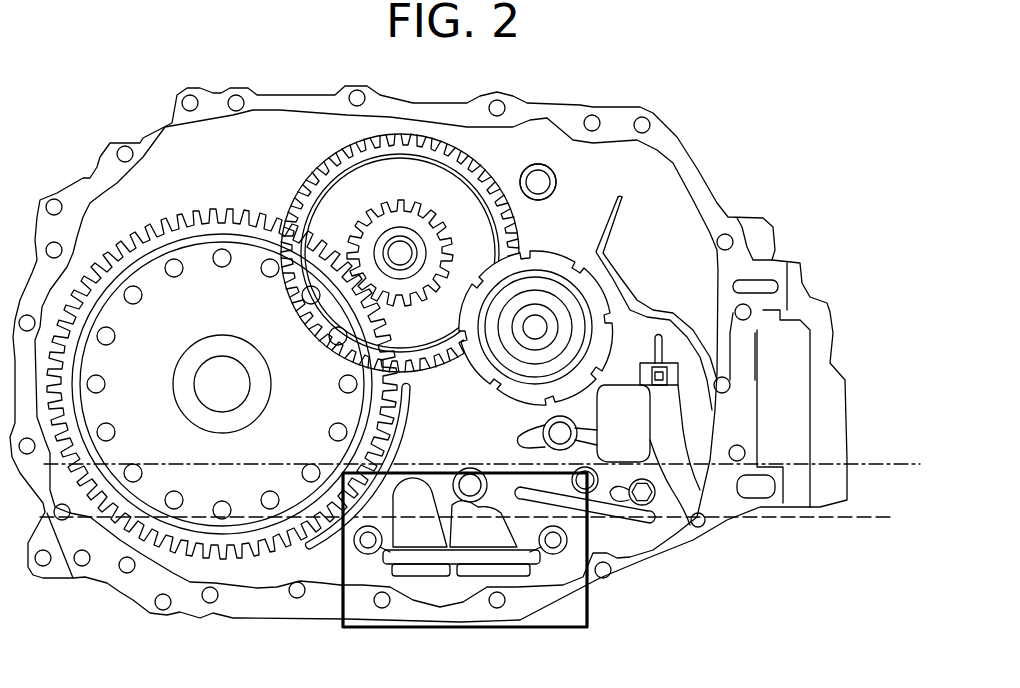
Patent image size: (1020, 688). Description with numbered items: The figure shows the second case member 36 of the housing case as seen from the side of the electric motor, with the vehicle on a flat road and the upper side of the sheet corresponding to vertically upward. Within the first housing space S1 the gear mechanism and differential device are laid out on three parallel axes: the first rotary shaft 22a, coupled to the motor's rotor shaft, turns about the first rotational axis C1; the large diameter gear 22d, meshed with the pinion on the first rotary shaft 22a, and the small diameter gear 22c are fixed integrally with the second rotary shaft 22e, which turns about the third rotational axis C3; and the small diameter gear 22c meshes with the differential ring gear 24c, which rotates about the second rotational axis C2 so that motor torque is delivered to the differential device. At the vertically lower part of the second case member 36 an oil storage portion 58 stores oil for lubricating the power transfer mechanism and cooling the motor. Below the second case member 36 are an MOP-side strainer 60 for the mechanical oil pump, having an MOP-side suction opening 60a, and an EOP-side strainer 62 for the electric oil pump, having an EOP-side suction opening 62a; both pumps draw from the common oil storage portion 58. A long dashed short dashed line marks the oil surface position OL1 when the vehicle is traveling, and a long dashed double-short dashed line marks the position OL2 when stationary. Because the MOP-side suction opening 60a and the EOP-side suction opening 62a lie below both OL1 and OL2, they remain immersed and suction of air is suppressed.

The second case member 36 is at (165, 132).
The large diameter gear 22d is at (325, 157).
The third rotational axis C3 is at (400, 253).
The first rotary shaft 22a is at (535, 295).
The first housing space S1 is at (574, 168).
The first rotational axis C1 is at (535, 327).
The small diameter gear 22c is at (377, 227).
The second rotary shaft 22e is at (430, 240).
The MOP-side strainer 60 is at (431, 484).
The EOP-side strainer 62 is at (502, 492).
The position of the oil surface when the vehicle is stationary OL2 is at (868, 465).
The position of the oil surface when the vehicle is traveling OL1 is at (855, 520).
The second rotational axis C2 is at (222, 384).
The differential ring gear 24c is at (250, 553).
The oil storage portion 58 is at (323, 570).
The MOP-side suction opening 60a is at (433, 590).
The EOP-side suction opening 62a is at (471, 590).